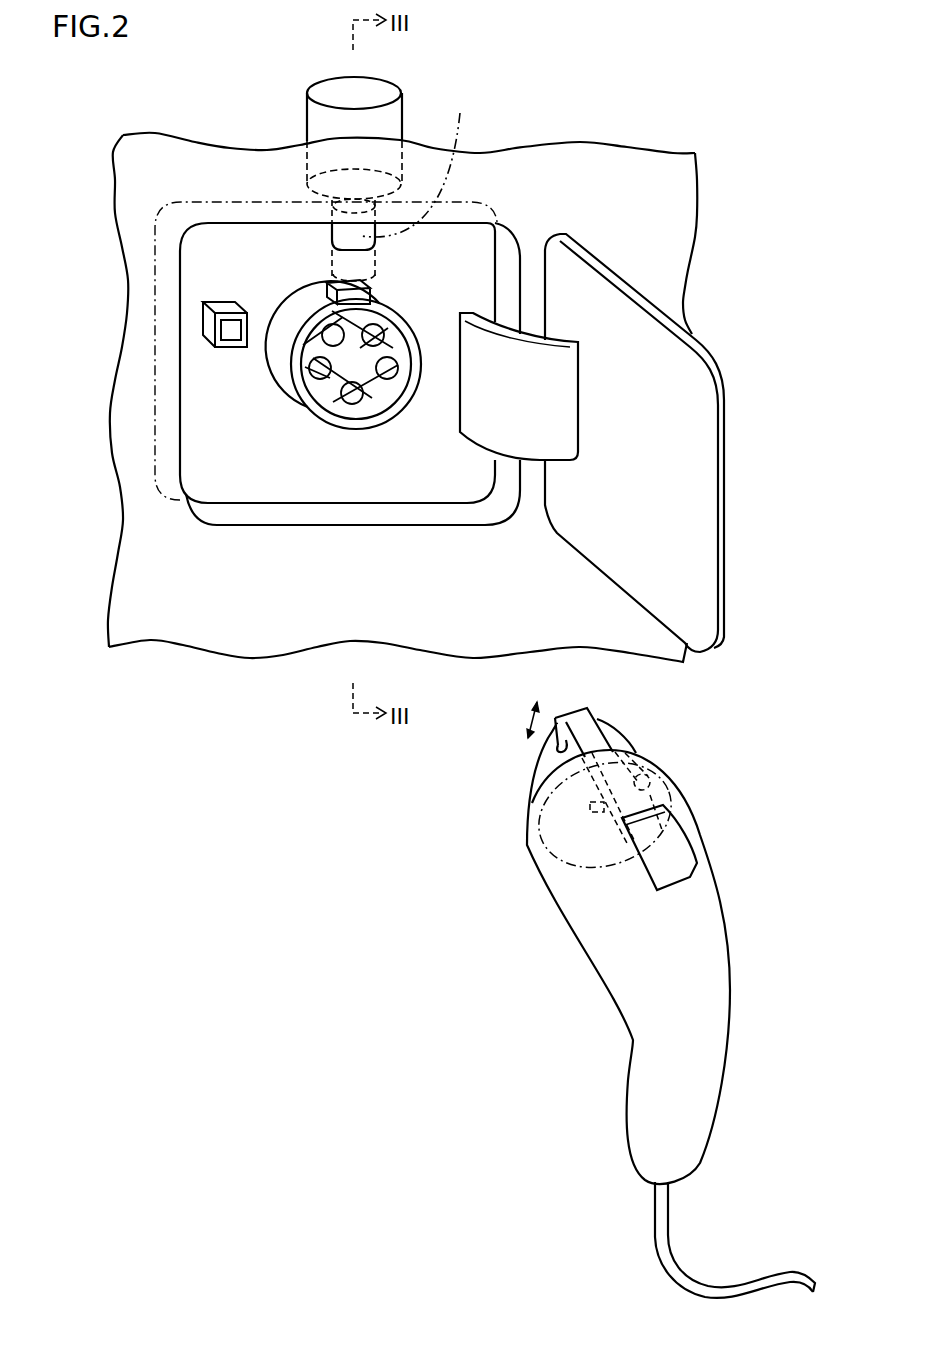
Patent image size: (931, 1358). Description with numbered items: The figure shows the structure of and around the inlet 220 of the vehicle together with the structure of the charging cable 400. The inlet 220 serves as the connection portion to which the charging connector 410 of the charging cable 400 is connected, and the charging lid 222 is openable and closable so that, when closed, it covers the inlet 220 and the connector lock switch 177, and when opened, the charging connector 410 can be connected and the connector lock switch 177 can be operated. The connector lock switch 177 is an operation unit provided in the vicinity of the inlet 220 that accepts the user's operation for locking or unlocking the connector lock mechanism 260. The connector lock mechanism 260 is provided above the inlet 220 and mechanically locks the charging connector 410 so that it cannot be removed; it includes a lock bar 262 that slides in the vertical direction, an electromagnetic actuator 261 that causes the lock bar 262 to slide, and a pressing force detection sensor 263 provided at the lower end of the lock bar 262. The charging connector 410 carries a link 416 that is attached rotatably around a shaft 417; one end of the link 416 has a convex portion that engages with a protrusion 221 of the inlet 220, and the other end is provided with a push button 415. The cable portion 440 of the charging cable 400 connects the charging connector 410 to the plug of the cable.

The connector lock switch 177 is at (226, 306).
The inlet 220 is at (303, 317).
The protrusion 221 is at (350, 290).
The charging lid 222 is at (725, 514).
The connector lock mechanism 260 is at (465, 71).
The electromagnetic actuator 261 is at (390, 120).
The lock bar 262 is at (420, 163).
The pressing force detection sensor 263 is at (333, 240).
The charging cable 400 is at (757, 870).
The charging connector 410 is at (727, 940).
The push button 415 is at (665, 812).
The link 416 is at (553, 746).
The shaft 417 is at (655, 760).
The cable portion 440 is at (663, 1237).